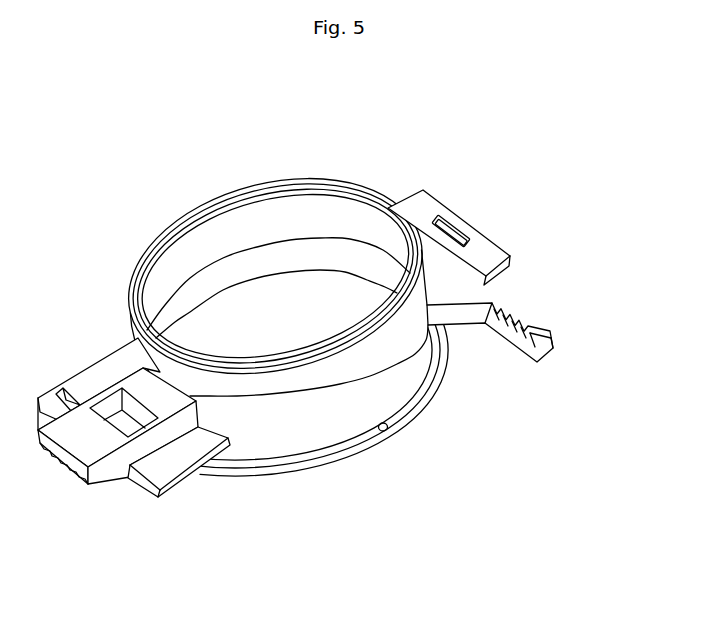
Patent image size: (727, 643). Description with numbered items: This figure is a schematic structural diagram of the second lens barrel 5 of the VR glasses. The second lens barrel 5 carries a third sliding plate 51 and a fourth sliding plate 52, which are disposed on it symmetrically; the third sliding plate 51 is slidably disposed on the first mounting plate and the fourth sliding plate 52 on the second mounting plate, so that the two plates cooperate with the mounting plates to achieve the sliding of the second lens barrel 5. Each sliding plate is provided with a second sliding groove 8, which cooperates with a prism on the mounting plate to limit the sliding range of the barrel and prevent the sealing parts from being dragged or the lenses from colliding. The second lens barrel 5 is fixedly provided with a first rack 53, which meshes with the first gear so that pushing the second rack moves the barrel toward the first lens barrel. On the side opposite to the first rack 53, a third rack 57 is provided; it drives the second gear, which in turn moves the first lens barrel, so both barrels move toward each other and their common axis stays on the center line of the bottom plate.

The second lens barrel 5 is at (212, 230).
The second sliding groove 8 is at (450, 227).
The third sliding plate 51 is at (470, 252).
The fourth sliding plate 52 is at (180, 460).
The first rack 53 is at (87, 493).
The third rack 57 is at (527, 330).